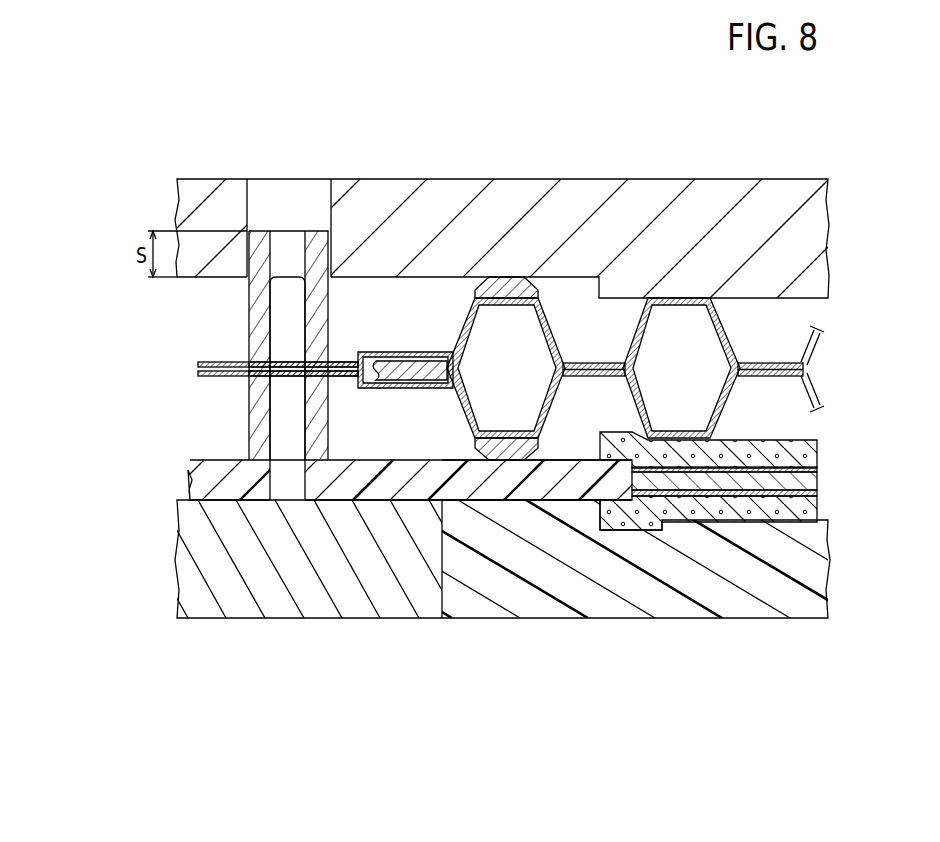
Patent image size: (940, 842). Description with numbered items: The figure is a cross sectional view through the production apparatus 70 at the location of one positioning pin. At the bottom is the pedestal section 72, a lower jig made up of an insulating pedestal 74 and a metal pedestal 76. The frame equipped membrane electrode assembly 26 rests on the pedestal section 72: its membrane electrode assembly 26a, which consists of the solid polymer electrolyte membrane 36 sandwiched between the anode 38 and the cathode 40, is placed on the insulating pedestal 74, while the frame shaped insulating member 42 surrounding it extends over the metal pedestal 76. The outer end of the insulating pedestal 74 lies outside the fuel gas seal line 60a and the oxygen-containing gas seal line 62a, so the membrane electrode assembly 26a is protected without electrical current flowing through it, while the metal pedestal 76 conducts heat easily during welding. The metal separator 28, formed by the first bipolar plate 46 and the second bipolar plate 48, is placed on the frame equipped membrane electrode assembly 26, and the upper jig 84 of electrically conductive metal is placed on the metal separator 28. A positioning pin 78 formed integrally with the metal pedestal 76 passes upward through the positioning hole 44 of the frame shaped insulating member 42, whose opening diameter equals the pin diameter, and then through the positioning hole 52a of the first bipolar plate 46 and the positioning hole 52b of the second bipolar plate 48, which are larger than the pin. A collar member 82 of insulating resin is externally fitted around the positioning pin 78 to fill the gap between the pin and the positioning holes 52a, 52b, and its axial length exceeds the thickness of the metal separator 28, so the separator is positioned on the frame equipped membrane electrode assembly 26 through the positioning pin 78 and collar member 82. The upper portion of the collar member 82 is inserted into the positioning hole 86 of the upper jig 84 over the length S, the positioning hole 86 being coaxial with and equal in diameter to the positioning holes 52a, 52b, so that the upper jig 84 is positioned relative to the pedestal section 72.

The production apparatus 70 is at (836, 110).
The upper jig 84 is at (730, 190).
The positioning hole 86 is at (333, 182).
The positioning pin 78 is at (283, 282).
The collar member 82 is at (249, 320).
The positioning hole 44 is at (276, 488).
The oxygen-containing gas seal line 62a is at (513, 290).
The fuel gas seal line 60a is at (500, 444).
The frame equipped membrane electrode assembly 26 is at (190, 470).
The frame shaped insulating member 42 is at (566, 492).
The pedestal section 72 is at (178, 534).
The metal pedestal 76 is at (244, 614).
The insulating pedestal 74 is at (615, 612).
The anode 38 is at (820, 448).
The solid polymer electrolyte membrane 36 is at (817, 480).
The cathode 40 is at (820, 503).
The membrane electrode assembly 26a is at (882, 434).
The metal separator 28 is at (133, 330).
The second bipolar plate 48 is at (198, 362).
The first bipolar plate 46 is at (198, 377).
The positioning hole 52b is at (333, 369).
The positioning hole 52a is at (333, 373).